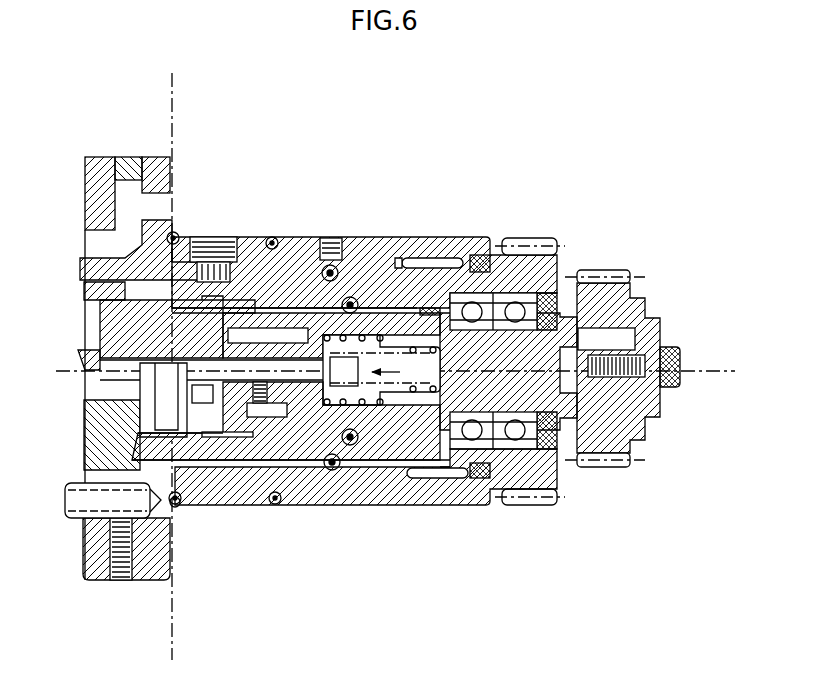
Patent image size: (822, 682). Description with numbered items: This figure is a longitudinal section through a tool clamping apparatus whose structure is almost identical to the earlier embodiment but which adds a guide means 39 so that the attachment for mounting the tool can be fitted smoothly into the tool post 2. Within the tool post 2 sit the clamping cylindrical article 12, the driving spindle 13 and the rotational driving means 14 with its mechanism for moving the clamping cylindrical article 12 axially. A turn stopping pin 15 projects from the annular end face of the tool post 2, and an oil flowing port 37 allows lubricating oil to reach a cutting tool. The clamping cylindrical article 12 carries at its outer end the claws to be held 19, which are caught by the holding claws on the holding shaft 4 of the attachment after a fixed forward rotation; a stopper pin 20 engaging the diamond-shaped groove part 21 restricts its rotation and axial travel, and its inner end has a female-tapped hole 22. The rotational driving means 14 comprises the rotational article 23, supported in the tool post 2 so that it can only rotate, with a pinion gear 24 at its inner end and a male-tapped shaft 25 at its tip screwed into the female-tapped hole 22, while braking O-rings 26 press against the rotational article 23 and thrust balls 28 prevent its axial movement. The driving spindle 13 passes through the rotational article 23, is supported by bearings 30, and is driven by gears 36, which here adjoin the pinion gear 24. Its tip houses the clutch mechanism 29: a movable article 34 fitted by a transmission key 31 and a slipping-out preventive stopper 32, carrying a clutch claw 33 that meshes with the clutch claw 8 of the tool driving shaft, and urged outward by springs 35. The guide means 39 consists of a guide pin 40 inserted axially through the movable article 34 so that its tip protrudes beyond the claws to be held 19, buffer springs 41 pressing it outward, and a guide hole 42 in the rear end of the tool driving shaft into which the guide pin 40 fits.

The tool post 2 is at (366, 472).
The holding shaft 4 is at (160, 300).
The clutch claw 8 is at (152, 390).
The clamping cylindrical article 12 is at (215, 472).
The driving spindle 13 is at (545, 310).
The rotational driving means 14 is at (411, 484).
The turn stopping pin 15 is at (100, 507).
The claws to be held 19 is at (175, 470).
The stopper pin 20 is at (225, 292).
The groove part 21 is at (246, 300).
The female-tapped hole 22 is at (266, 298).
The rotational article 23 is at (456, 455).
The pinion gear 24 is at (526, 240).
The male-tapped shaft 25 is at (237, 440).
The braking O-rings 26 is at (297, 303).
The thrust balls 28 is at (331, 471).
The clutch mechanism 29 is at (331, 264).
The bearings 30 is at (517, 440).
The transmission key 31 is at (211, 268).
The slipping-out preventive stopper 32 is at (274, 412).
The clutch claw 33 is at (197, 345).
The movable article 34 is at (362, 304).
The springs 35 is at (408, 261).
The gears 36 is at (603, 270).
The oil flowing port 37 is at (92, 248).
The guide means 39 is at (400, 372).
The guide pin 40 is at (155, 372).
The buffer springs 41 is at (412, 398).
The guide hole 42 is at (102, 355).